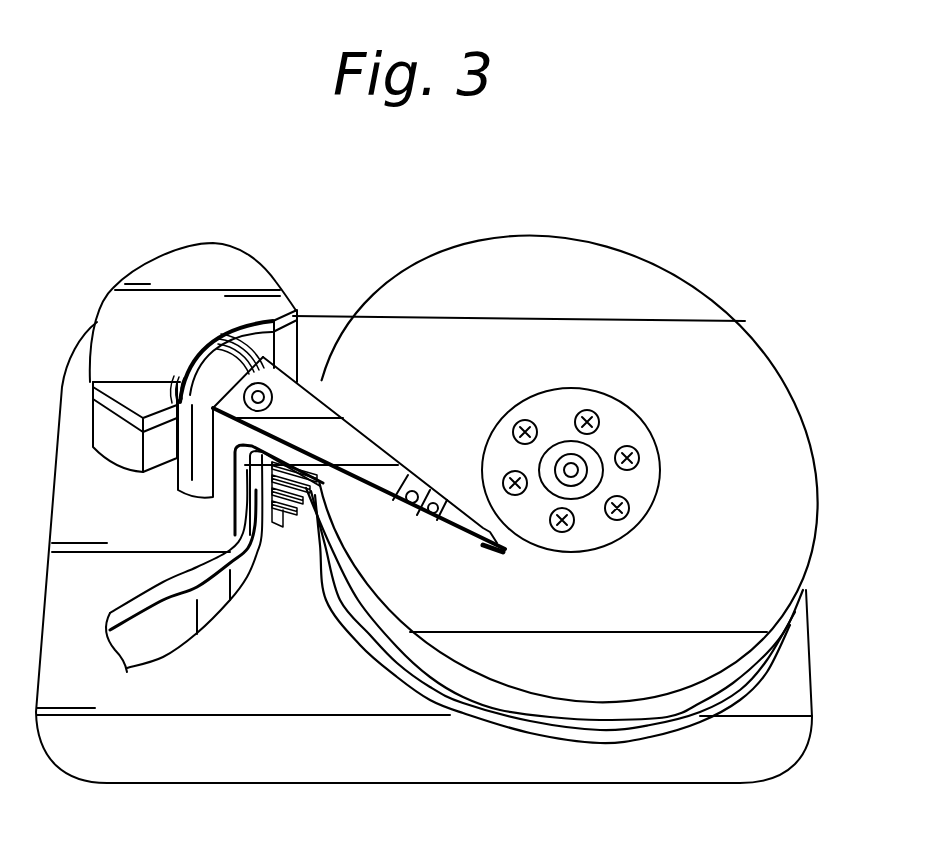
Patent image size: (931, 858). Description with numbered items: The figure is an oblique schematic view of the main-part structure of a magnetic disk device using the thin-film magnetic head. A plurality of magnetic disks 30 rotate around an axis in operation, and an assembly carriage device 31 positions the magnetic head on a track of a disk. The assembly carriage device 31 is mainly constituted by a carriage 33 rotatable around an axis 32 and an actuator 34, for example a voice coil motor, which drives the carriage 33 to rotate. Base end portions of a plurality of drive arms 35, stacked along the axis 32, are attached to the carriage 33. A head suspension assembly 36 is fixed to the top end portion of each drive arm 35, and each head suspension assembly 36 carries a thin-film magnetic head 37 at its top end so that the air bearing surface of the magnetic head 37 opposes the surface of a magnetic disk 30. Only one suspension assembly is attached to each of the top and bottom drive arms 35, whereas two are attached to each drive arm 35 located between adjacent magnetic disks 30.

The magnetic disks 30 is at (770, 302).
The assembly carriage device 31 is at (291, 240).
The axis 32 is at (272, 396).
The carriage 33 is at (217, 467).
The actuator 34 is at (137, 397).
The drive arms 35 is at (347, 443).
The head suspension assembly 36 is at (454, 522).
The thin-film magnetic head 37 is at (503, 552).